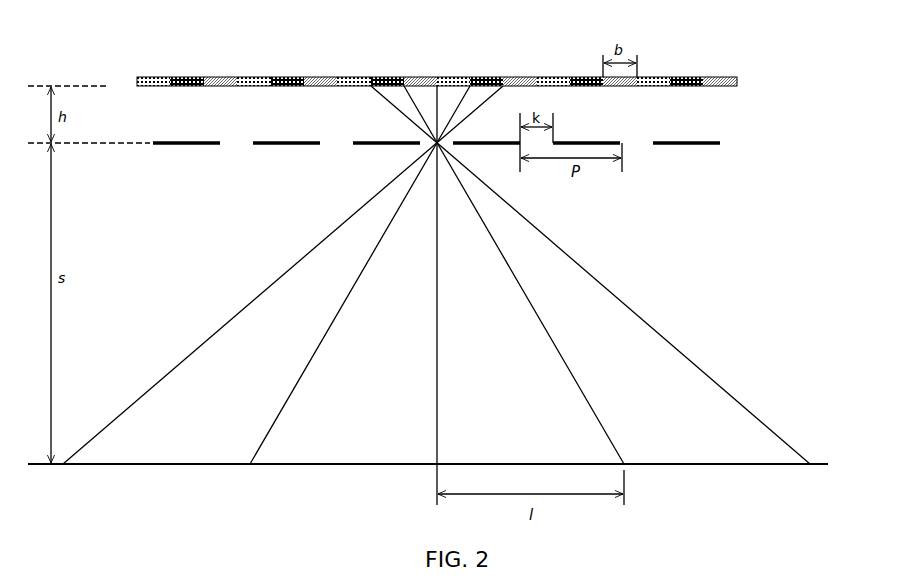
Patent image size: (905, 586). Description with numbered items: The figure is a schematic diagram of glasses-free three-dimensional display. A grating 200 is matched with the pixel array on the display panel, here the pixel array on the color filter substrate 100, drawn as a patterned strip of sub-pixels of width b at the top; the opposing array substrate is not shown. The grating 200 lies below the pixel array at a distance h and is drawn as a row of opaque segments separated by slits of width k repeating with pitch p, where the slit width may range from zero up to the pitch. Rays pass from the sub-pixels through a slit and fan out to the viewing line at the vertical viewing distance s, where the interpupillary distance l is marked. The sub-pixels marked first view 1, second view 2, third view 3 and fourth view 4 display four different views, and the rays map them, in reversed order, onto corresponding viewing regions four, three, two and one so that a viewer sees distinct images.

The color filter substrate 100 is at (703, 77).
The grating 200 is at (708, 143).
The first view 1 is at (590, 263).
The second view 2 is at (514, 263).
The third view 3 is at (360, 263).
The fourth view 4 is at (283, 263).